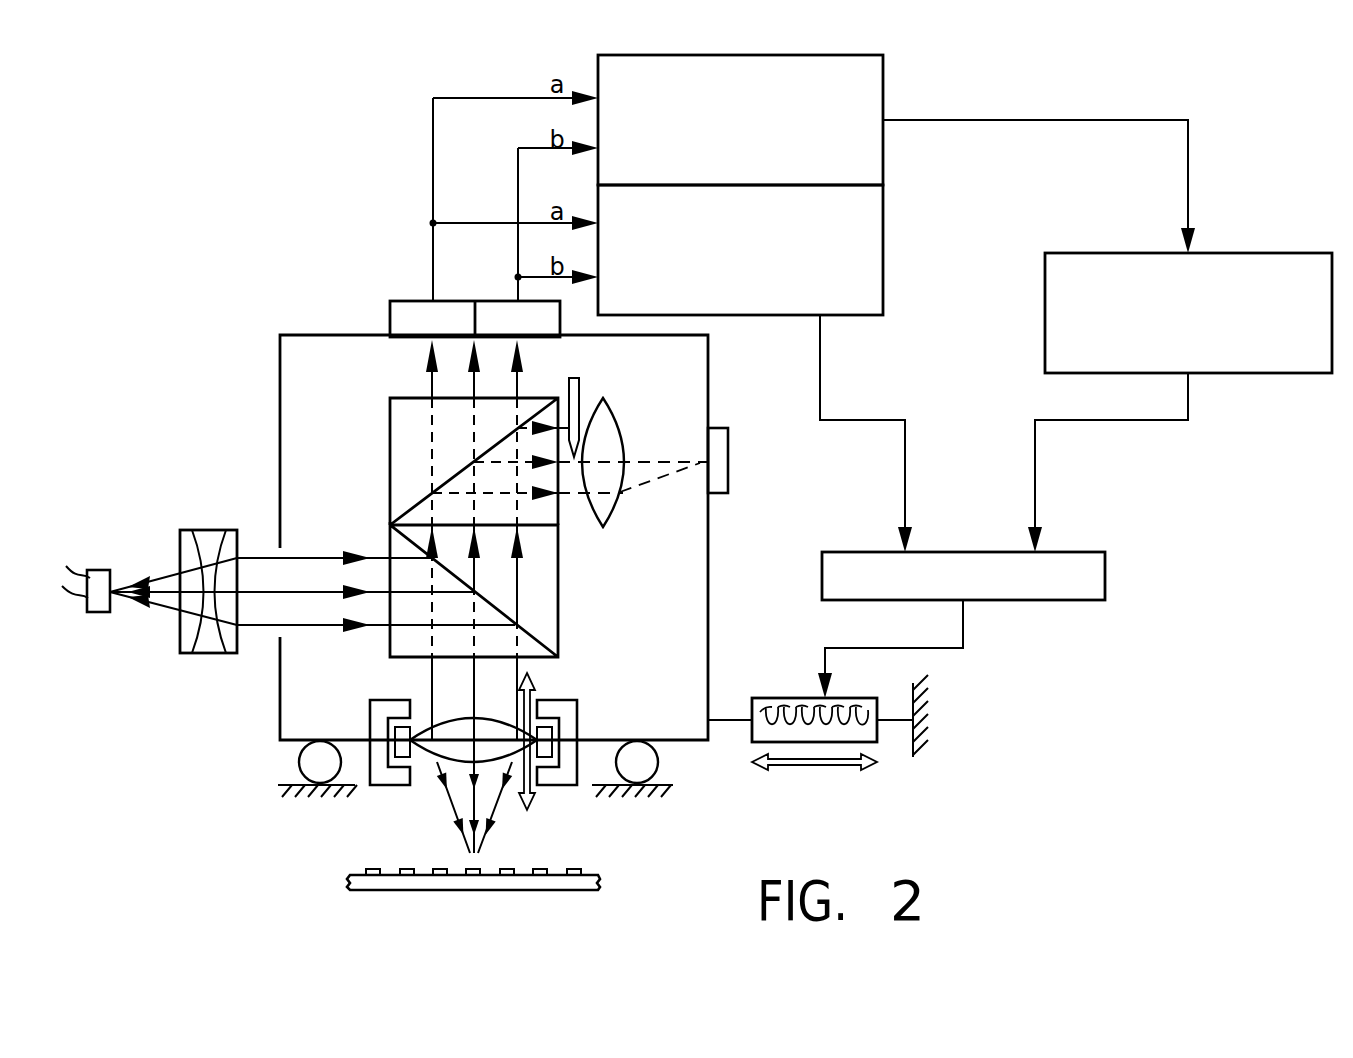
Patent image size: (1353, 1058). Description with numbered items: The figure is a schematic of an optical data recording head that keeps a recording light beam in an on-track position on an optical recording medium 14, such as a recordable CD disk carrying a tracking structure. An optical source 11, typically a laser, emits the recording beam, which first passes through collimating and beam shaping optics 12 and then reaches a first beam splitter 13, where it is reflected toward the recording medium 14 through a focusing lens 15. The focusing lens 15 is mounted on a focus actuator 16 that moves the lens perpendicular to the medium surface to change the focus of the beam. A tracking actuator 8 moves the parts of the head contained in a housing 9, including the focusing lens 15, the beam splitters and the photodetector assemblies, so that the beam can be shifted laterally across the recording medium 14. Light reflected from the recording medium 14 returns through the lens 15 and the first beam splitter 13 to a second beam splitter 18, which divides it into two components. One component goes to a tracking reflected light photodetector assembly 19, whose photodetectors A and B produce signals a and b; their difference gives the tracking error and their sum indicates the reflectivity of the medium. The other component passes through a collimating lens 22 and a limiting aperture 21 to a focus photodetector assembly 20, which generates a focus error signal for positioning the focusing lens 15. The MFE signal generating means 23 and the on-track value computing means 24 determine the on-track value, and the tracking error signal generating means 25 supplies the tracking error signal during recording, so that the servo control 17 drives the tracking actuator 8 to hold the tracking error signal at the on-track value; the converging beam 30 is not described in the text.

The tracking actuator 8 is at (786, 698).
The housing 9 is at (280, 390).
The optical source 11 is at (102, 570).
The collimating and beam shaping optics 12 is at (207, 530).
The first beam splitter 13 is at (558, 588).
The optical recording medium 14 is at (600, 883).
The focusing lens 15 is at (423, 762).
The focus actuator 16 is at (560, 785).
The servo control system 17 is at (1106, 572).
The second beam splitter 18 is at (390, 450).
The tracking reflected light photodetector assembly 19 is at (412, 301).
The focus photodetector assembly 20 is at (728, 440).
The limiting aperture 21 is at (579, 393).
The collimating lens 22 is at (618, 507).
The MFE signal generating means 23 is at (884, 106).
The on-track value computing means 24 is at (1287, 253).
The tracking error signal generating means 25 is at (884, 232).
The converging light beam 30 is at (445, 800).